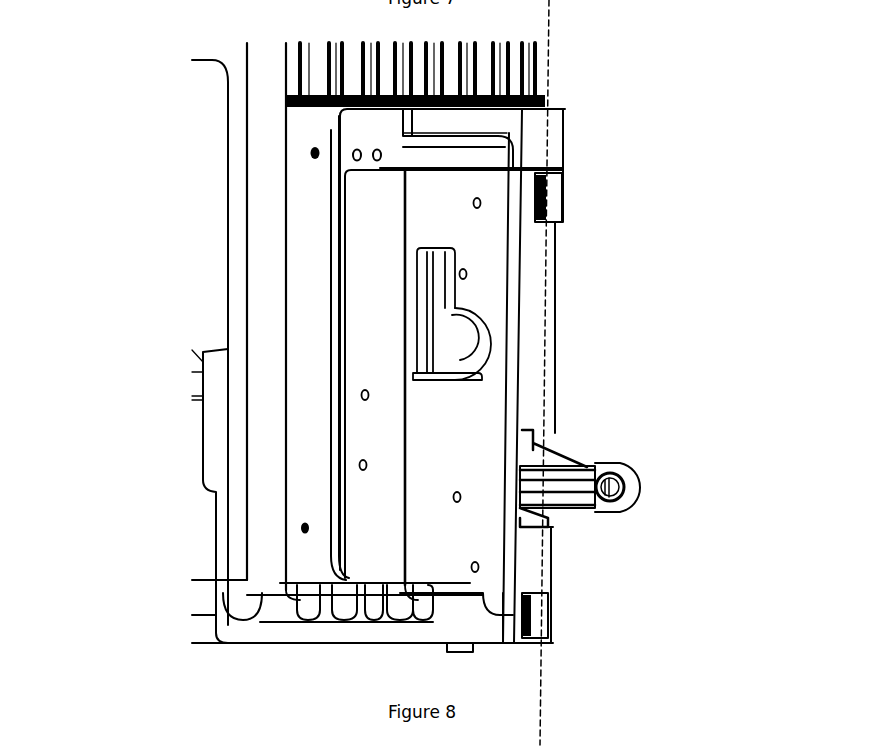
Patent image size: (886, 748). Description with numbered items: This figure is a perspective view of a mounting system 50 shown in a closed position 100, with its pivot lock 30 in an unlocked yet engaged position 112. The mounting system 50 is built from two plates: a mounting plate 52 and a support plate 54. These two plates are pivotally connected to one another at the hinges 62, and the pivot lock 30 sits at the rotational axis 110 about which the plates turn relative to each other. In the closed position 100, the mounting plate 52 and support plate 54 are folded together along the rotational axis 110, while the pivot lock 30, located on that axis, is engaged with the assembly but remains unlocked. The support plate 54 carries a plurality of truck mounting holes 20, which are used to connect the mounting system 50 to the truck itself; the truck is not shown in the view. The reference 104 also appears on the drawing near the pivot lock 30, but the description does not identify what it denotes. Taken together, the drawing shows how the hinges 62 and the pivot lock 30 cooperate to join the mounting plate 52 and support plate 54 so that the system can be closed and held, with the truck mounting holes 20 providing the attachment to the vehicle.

The truck mounting holes 20 is at (458, 268).
The pivot lock 30 is at (653, 477).
The mounting system 50 is at (592, 108).
The mounting plate 52 is at (477, 402).
The support plate 54 is at (508, 120).
The hinges 62 is at (548, 152).
The closed position 100 is at (742, 254).
The latch assembly 104 is at (653, 452).
The rotational axis 110 is at (542, 677).
The engaged position 112 is at (515, 473).